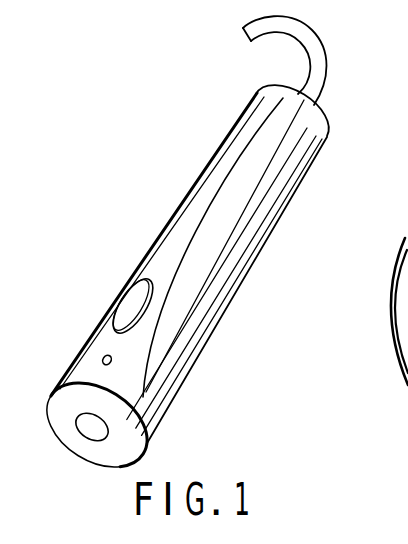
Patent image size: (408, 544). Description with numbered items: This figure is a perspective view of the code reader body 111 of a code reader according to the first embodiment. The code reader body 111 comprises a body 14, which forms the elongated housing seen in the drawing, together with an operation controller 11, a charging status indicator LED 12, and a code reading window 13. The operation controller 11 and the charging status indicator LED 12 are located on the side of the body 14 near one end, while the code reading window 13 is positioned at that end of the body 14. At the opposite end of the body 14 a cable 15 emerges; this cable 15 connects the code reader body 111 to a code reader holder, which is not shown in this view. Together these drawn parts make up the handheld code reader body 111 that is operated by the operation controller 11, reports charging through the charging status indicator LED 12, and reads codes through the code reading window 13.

The operation controller 11 is at (127, 302).
The charging status indicator LED 12 is at (103, 358).
The code reading window 13 is at (79, 432).
The body 14 is at (250, 261).
The cable 15 is at (322, 73).
The code reader body 111 is at (178, 198).